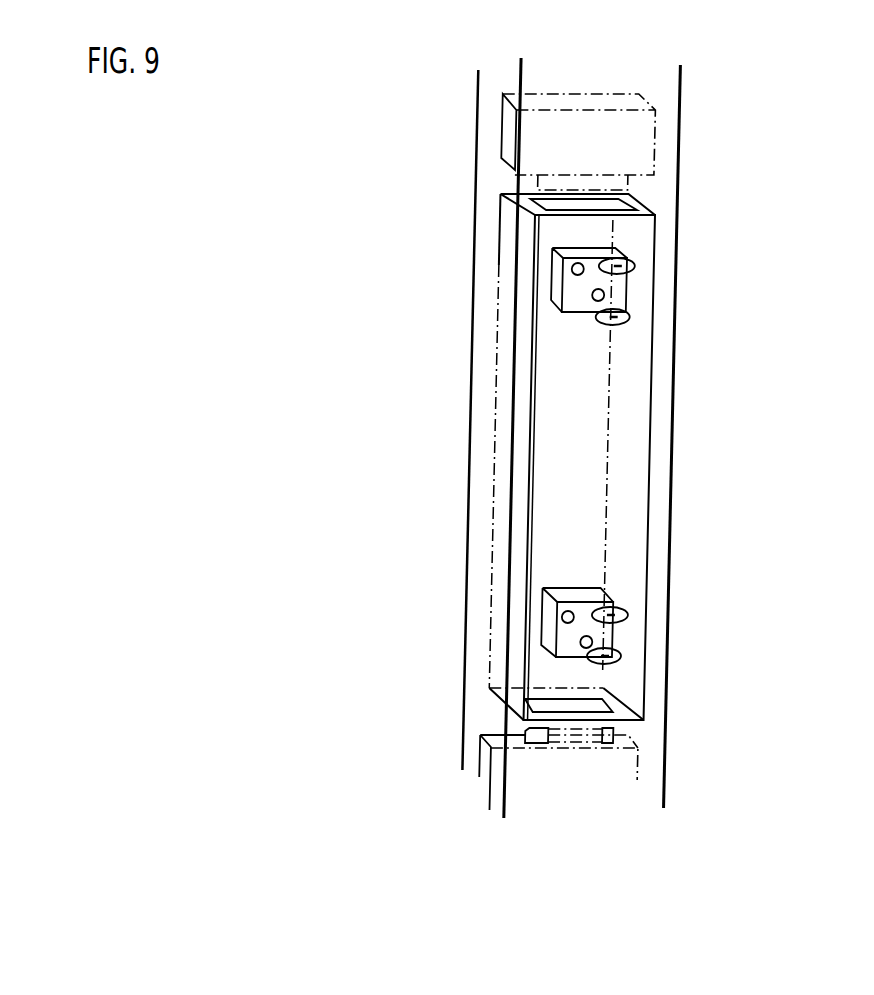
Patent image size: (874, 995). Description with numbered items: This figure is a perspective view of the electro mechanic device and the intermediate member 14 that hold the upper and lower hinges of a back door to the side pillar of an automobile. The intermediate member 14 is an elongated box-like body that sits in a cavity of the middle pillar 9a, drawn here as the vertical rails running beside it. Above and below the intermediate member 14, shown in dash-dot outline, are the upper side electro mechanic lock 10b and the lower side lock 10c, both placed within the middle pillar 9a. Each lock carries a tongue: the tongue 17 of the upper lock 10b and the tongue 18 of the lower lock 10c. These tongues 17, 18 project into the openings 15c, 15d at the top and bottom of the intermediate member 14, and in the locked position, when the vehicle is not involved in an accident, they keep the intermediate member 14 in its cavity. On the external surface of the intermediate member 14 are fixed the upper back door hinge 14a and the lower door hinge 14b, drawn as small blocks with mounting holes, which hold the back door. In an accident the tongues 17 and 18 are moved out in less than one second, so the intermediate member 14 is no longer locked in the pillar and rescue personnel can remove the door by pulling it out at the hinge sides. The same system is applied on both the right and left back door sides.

The middle pillar 9a is at (660, 76).
The upper side electro mechanic lock 10b is at (595, 122).
The lower side lock 10c is at (621, 768).
The intermediate member 14 is at (580, 438).
The upper back door hinge 14a is at (607, 280).
The lower door hinge 14b is at (600, 627).
The upper opening 15c is at (557, 207).
The lower opening 15d is at (580, 702).
The tongue 17 is at (585, 178).
The tongue 18 is at (549, 742).